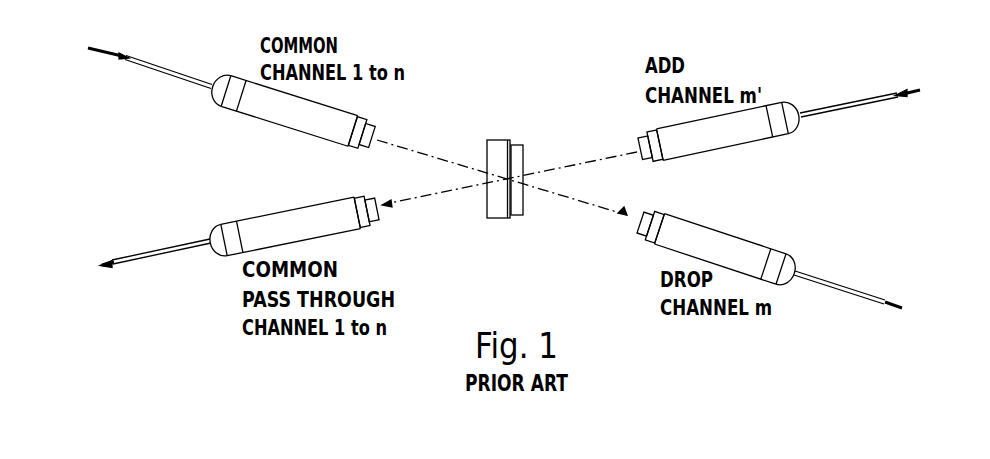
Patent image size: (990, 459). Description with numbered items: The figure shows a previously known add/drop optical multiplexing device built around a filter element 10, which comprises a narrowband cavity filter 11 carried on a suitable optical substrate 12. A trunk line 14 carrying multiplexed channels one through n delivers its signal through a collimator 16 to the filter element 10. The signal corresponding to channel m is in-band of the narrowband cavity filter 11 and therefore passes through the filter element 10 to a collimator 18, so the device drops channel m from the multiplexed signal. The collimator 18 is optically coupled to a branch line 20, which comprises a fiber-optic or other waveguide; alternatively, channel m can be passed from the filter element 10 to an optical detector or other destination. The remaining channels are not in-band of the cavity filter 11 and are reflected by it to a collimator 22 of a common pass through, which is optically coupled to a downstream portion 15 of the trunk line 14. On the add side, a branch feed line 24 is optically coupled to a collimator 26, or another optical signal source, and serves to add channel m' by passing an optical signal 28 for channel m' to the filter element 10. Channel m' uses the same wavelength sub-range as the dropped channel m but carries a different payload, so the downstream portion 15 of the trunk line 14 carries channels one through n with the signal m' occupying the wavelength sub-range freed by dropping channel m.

The filter element 10 is at (503, 226).
The narrowband cavity filter 11 is at (514, 145).
The optical substrate 12 is at (500, 140).
The trunk line 14 is at (129, 60).
The downstream portion of trunk line 15 is at (158, 250).
The collimator 16 is at (276, 113).
The collimator 18 is at (710, 230).
The branch line 20 is at (853, 288).
The collimator 22 is at (298, 215).
The branch feed line 24 is at (853, 103).
The collimator 26 is at (730, 141).
The optical signal 28 is at (587, 160).